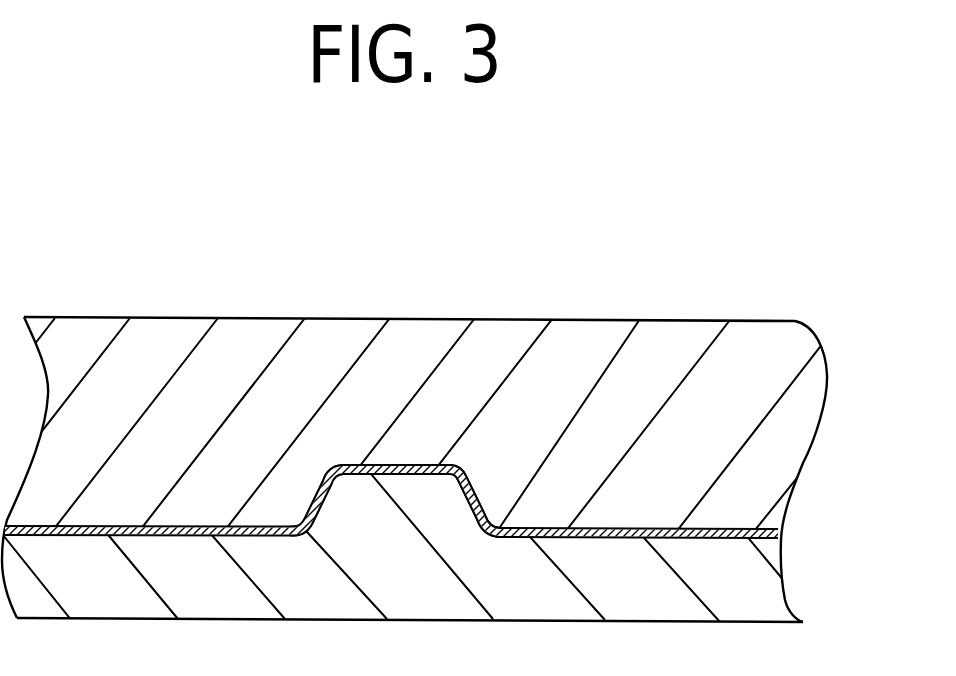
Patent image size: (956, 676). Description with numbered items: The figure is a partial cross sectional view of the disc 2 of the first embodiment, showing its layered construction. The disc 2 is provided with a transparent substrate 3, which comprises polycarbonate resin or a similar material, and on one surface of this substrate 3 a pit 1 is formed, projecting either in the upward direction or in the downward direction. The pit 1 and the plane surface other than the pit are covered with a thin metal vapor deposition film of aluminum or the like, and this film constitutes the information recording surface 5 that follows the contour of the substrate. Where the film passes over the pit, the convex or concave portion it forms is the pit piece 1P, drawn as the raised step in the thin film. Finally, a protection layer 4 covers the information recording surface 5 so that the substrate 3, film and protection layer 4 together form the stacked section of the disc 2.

The pit 1 is at (418, 297).
The pit piece 1P is at (480, 466).
The disc 2 is at (130, 317).
The transparent substrate 3 is at (633, 330).
The protection layer 4 is at (768, 582).
The information recording surface 5 is at (641, 526).